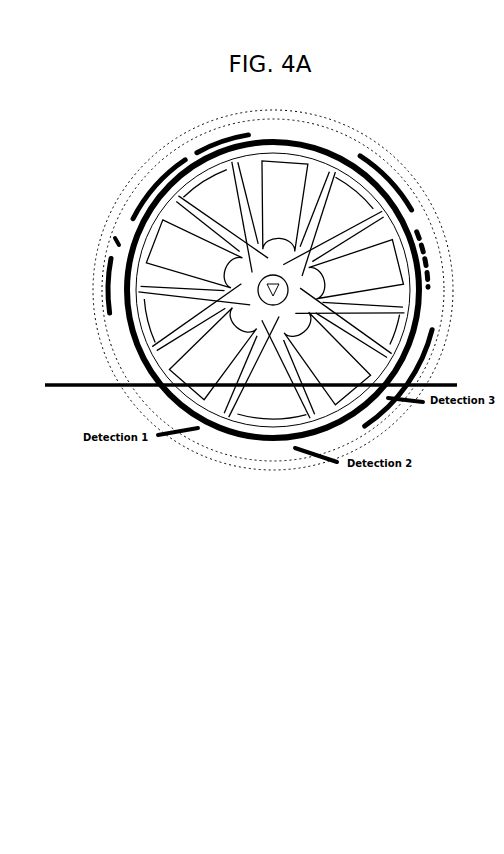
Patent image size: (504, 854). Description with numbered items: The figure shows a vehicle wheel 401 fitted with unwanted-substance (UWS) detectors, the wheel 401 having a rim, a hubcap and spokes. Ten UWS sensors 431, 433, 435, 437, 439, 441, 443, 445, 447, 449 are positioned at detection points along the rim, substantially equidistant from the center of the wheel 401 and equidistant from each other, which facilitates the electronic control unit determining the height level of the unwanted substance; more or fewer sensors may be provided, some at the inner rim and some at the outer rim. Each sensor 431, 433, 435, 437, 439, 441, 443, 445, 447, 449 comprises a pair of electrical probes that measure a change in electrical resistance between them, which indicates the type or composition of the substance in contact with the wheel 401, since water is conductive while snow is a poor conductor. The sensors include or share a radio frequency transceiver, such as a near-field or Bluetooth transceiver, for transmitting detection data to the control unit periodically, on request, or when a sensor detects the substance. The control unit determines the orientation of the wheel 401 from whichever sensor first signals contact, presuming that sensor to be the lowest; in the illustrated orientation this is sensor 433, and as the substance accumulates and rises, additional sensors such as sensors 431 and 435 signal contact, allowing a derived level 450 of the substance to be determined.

The vehicle wheel 401 is at (270, 133).
The UWS sensor 431 is at (212, 432).
The UWS sensor 433 is at (278, 447).
The UWS sensor 435 is at (390, 400).
The UWS sensor 437 is at (412, 325).
The UWS sensor 439 is at (390, 228).
The UWS sensor 441 is at (347, 155).
The UWS sensor 443 is at (246, 136).
The UWS sensor 445 is at (150, 180).
The UWS sensor 447 is at (125, 262).
The UWS sensor 449 is at (140, 350).
The derived water level 450 is at (244, 368).